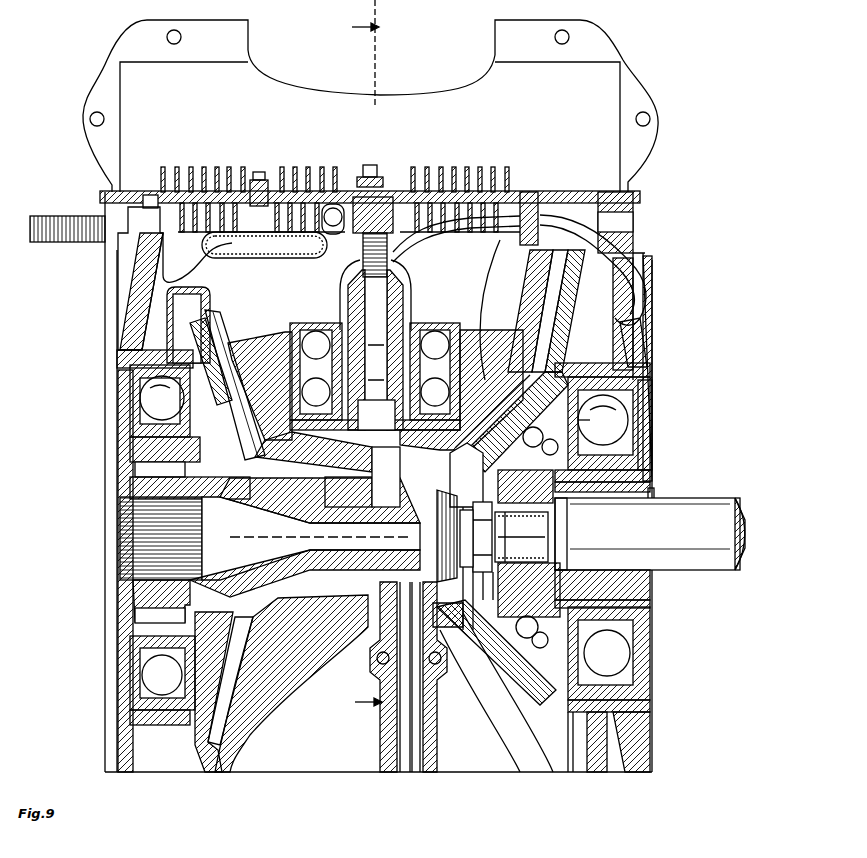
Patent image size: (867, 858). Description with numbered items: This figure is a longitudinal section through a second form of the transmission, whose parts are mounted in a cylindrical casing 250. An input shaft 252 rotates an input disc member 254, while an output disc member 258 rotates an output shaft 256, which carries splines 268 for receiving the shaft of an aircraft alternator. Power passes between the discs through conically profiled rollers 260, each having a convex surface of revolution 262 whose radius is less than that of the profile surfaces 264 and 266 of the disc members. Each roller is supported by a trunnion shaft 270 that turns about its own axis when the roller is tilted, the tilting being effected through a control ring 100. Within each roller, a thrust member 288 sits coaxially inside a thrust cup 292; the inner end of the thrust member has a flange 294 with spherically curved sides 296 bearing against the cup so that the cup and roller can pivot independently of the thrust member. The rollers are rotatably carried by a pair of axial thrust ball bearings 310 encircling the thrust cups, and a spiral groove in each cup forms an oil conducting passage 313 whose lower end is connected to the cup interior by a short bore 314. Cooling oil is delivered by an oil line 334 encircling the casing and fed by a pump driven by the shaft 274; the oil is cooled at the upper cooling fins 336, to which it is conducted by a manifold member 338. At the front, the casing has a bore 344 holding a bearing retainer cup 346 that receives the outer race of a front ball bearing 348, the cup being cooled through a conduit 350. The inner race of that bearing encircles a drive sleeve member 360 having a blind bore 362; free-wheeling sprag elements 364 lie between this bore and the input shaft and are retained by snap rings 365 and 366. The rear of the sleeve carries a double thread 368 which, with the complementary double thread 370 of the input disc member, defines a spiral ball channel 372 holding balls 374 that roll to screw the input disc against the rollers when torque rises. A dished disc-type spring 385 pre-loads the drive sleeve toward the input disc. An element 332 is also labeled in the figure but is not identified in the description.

The control ring 100 is at (515, 205).
The cylindrical casing 250 is at (120, 312).
The input shaft 252 is at (650, 534).
The input disc member 254 is at (640, 258).
The output shaft 256 is at (275, 625).
The output disc member 258 is at (243, 330).
The power-transmitting conically profiled rollers 260 is at (248, 348).
The convex surface of revolution 262 is at (313, 458).
The profile surface 264 is at (527, 318).
The profile surface 266 is at (222, 330).
The splines 268 is at (135, 545).
The trunnion shaft 270 is at (345, 283).
The shaft 274 is at (412, 745).
The thrust member 288 is at (376, 353).
The thrust cup 292 is at (332, 322).
The flange 294 is at (376, 362).
The spherically curved sides 296 is at (372, 410).
The axial thrust type ball bearings 310 is at (472, 317).
The oil conducting passage 313 is at (316, 368).
The short bore 314 is at (348, 492).
The bolt 332 is at (370, 178).
The oil line 334 is at (330, 205).
The upper cooling fins 336 is at (258, 185).
The manifold member 338 is at (264, 245).
The bore 344 is at (650, 378).
The bearing retainer cup 346 is at (652, 398).
The front ball bearing 348 is at (630, 420).
The conduit 350 is at (655, 310).
The drive sleeve member 360 is at (652, 452).
The blind bore 362 is at (652, 480).
The free-wheeling sprag elements 364 is at (655, 492).
The snap ring 365 is at (652, 580).
The snap ring 366 is at (652, 604).
The double thread 368 is at (558, 510).
The double thread 370 is at (609, 423).
The spiral ball channel 372 is at (500, 470).
The balls 374 is at (520, 650).
The flexible dished disc-type spring 385 is at (648, 343).